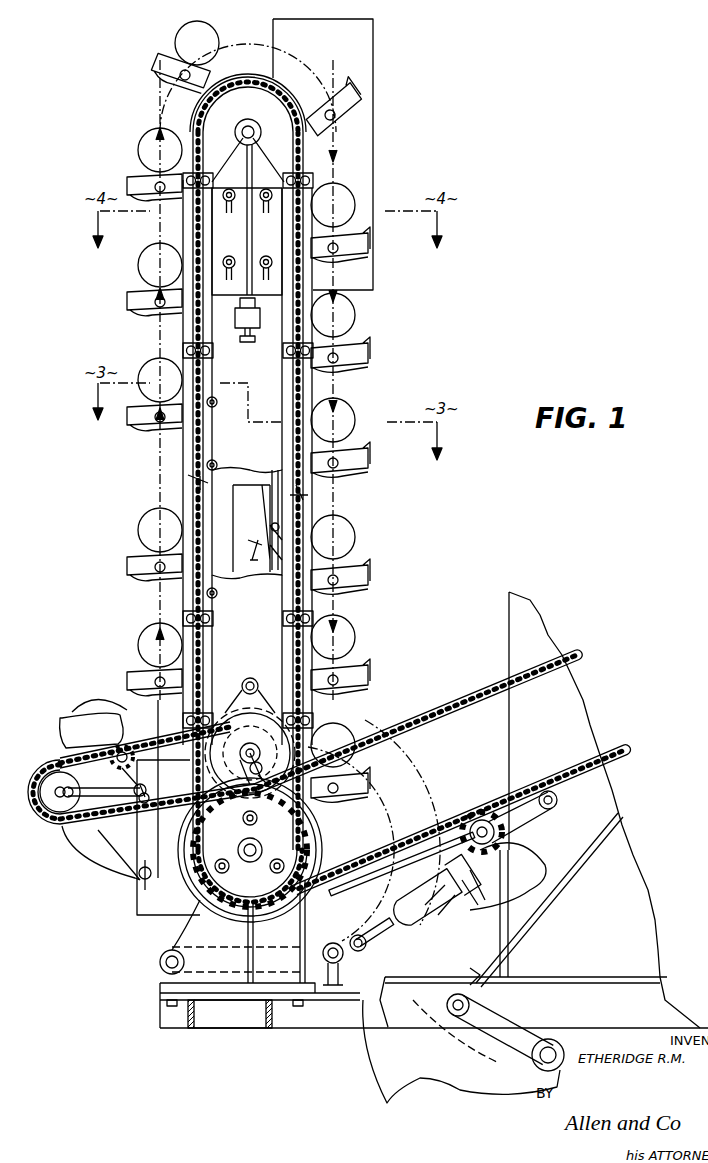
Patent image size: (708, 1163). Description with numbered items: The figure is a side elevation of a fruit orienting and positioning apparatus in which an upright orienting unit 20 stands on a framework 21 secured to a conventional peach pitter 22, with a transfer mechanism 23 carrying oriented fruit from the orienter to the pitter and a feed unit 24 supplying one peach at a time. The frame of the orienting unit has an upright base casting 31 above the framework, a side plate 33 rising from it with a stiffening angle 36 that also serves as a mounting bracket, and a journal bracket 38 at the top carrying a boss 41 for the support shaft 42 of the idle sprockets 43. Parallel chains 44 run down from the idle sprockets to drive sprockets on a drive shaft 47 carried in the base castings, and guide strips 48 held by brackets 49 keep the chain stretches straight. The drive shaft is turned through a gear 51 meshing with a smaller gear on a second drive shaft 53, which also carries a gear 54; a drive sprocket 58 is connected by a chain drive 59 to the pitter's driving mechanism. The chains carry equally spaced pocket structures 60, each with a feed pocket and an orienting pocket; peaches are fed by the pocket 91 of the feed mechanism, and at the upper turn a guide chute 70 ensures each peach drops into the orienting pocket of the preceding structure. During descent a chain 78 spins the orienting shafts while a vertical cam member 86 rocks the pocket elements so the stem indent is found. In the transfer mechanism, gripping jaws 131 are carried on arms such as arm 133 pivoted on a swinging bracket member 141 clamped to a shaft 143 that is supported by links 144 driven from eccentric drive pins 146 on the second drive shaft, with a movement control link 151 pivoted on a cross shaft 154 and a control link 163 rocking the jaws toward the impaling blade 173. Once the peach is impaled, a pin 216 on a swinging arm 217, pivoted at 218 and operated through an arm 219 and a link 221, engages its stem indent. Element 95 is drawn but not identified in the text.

The orienting unit 20 is at (392, 522).
The framework 21 is at (291, 1032).
The peach pitter 22 is at (639, 864).
The transfer mechanism 23 is at (420, 882).
The feed unit 24 is at (110, 672).
The base casting 31 is at (217, 983).
The side plate 33 is at (258, 612).
The stiffening angle 36 is at (235, 502).
The journal bracket 38 is at (247, 265).
The boss 41 is at (243, 124).
The support shaft 42 is at (249, 128).
The idle sprocket 43 is at (236, 95).
The chain 44 is at (200, 483).
The drive shaft 47 is at (255, 850).
The guide strip 48 is at (310, 395).
The bracket 49 is at (283, 352).
The gear 51 is at (190, 884).
The second drive shaft 53 is at (240, 753).
The gear 54 is at (236, 708).
The drive sprocket 58 is at (230, 841).
The chain drive 59 is at (443, 708).
The pocket structure 60 is at (160, 46).
The guide chute 70 is at (373, 62).
The chain 78 is at (277, 478).
The cam member 86 is at (265, 511).
The pocket 91 is at (68, 726).
The ring 95 is at (215, 462).
The peach gripping jaw 131 is at (468, 873).
The arm 133 is at (447, 918).
The swinging bracket member 141 is at (347, 970).
The shaft 143 is at (333, 987).
The link 144 is at (300, 945).
The eccentric drive pin 146 is at (255, 746).
The movement control link 151 is at (270, 972).
The cross shaft 154 is at (168, 970).
The control link 163 is at (376, 886).
The impaling blade 173 is at (517, 906).
The pin 216 is at (440, 935).
The swinging arm 217 is at (380, 1081).
The pivot 218 is at (551, 1040).
The arm 219 is at (488, 1004).
The link 221 is at (573, 888).